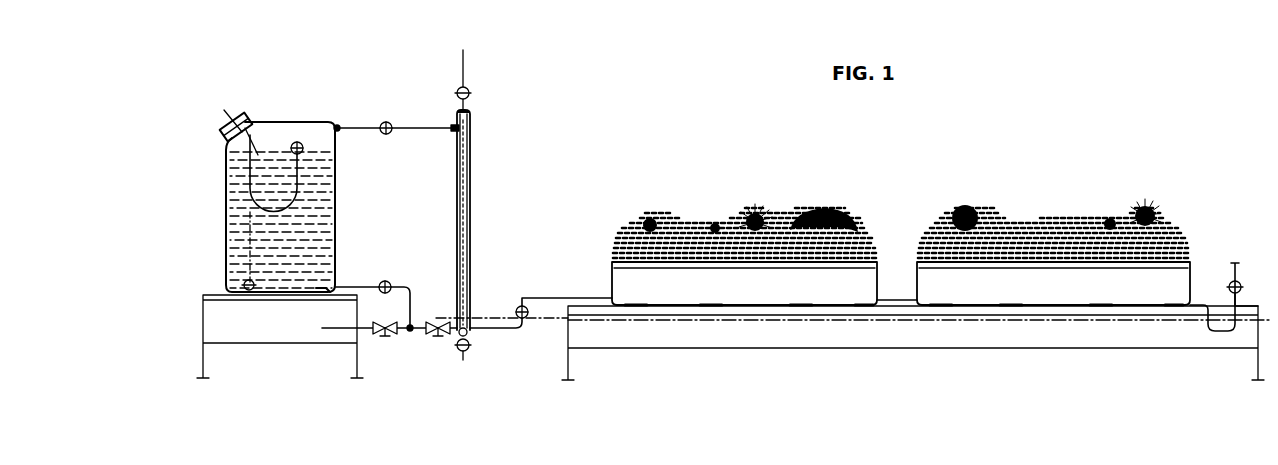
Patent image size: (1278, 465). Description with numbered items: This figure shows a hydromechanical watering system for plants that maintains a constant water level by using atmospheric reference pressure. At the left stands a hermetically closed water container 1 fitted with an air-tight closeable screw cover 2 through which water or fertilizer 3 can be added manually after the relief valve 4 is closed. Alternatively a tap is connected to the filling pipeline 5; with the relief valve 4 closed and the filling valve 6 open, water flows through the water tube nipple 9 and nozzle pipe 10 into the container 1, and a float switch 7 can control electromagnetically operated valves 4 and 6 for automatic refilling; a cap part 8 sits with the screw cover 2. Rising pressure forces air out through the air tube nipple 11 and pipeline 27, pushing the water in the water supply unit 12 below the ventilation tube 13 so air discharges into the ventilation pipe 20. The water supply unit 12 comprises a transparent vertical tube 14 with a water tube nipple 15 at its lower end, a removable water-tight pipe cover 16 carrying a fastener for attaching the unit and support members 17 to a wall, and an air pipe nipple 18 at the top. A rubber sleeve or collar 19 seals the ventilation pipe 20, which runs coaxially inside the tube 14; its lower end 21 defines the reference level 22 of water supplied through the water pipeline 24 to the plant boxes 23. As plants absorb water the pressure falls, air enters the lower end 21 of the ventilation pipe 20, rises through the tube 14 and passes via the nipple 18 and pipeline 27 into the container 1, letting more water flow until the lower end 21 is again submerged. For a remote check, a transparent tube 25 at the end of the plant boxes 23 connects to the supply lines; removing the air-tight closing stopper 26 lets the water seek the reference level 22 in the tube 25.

The water container 1 is at (337, 200).
The air-tight closeable screw cover 2 is at (250, 118).
The liquid 3 is at (294, 246).
The relief valve 4 is at (436, 337).
The filling pipeline 5 is at (324, 330).
The filling valve 6 is at (386, 337).
The float switch 7 is at (290, 148).
The cap part 8 is at (236, 118).
The water tube nipple 9 is at (339, 286).
The nozzle pipe 10 is at (318, 287).
The air tube nipple 11 is at (338, 126).
The water supply unit 12 is at (468, 178).
The ventilation tube 13 is at (470, 70).
The transparent vertical tube 14 is at (470, 222).
The water tube nipple 15 is at (475, 332).
The water-tight pipe cover 16 is at (469, 348).
The support members 17 is at (471, 93).
The air pipe nipple 18 is at (452, 126).
The rubber sleeve or collar 19 is at (471, 116).
The ventilation pipe 20 is at (470, 260).
The lower end of ventilation pipe 21 is at (450, 318).
The reference level 22 is at (510, 310).
The plant boxes 23 is at (608, 268).
The water pipeline 24 is at (544, 296).
The tube 25 is at (1240, 316).
The air-tight closing stopper 26 is at (1238, 262).
The pipeline 27 is at (390, 125).